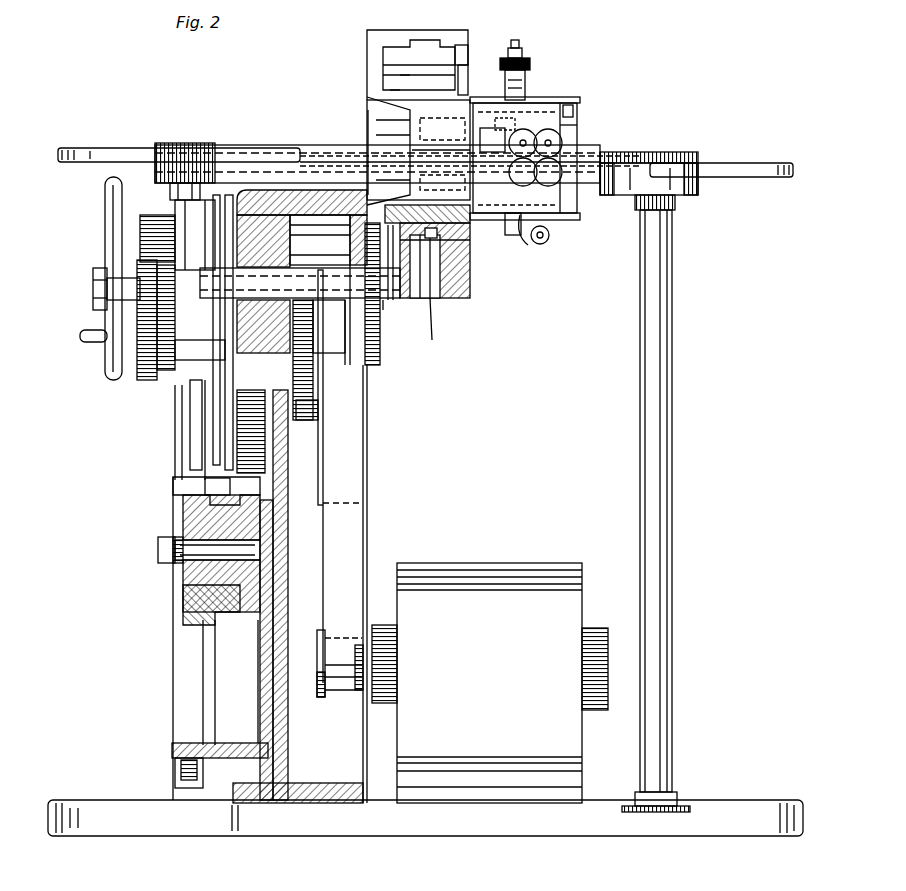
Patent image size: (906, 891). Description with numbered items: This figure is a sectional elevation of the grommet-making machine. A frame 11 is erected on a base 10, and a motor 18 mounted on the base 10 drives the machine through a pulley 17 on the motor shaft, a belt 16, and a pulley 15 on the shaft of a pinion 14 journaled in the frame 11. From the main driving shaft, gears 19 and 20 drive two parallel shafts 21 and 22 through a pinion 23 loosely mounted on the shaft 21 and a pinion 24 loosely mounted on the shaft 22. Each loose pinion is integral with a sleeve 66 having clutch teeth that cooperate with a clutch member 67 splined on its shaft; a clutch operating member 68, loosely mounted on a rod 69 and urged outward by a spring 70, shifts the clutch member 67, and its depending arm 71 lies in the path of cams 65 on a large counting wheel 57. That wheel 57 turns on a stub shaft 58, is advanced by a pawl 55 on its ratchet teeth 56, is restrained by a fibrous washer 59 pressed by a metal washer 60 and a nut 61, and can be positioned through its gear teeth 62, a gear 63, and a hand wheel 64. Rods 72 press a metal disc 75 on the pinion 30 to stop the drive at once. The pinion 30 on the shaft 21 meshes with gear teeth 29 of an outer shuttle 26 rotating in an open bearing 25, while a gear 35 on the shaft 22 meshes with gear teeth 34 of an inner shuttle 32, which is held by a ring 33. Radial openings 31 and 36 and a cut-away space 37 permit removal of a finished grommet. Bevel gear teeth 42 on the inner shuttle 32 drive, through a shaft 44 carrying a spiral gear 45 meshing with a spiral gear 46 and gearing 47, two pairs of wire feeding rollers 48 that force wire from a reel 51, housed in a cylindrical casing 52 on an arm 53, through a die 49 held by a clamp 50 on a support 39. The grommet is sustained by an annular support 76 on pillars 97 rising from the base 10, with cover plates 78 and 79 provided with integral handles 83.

The base 10 is at (398, 826).
The frame 11 is at (323, 503).
The pinion 14 is at (323, 425).
The pulley 15 is at (367, 398).
The belt 16 is at (352, 456).
The pulley 17 is at (316, 672).
The motor 18 is at (490, 683).
The gear 19 is at (105, 362).
The gear 20 is at (105, 340).
The shaft 21 is at (303, 232).
The shaft 22 is at (340, 315).
The pinion 23 is at (175, 225).
The pinion 24 is at (135, 258).
The bearing 25 is at (470, 290).
The shuttle 26 is at (470, 248).
The gear teeth 29 is at (400, 290).
The pinion 30 is at (388, 300).
The radial opening 31 is at (420, 60).
The shuttle 32 is at (440, 298).
The ring 33 is at (435, 331).
The gear teeth 34 is at (379, 152).
The gear 35 is at (372, 365).
The radial opening 36 is at (395, 90).
The cut-away space 37 is at (405, 75).
The support 39 is at (560, 130).
The bevel gear teeth 42 is at (478, 222).
The shaft 44 is at (545, 240).
The spiral gear 45 is at (540, 241).
The spiral gear 46 is at (536, 216).
The gearing 47 is at (512, 117).
The wire feeding rollers 48 is at (565, 140).
The die 49 is at (441, 136).
The clamp 50 is at (494, 140).
The reel 51 is at (562, 118).
The cylindrical casing 52 is at (548, 100).
The arm 53 is at (478, 125).
The pawl 55 is at (313, 345).
The ratchet teeth 56 is at (290, 480).
The counting wheel 57 is at (200, 605).
The stub shaft 58 is at (185, 520).
The fibrous washer 59 is at (185, 590).
The metal washer 60 is at (178, 565).
The nut 61 is at (160, 540).
The gear teeth 62 is at (230, 475).
The gear 63 is at (240, 430).
The hand wheel 64 is at (180, 350).
The cams 65 is at (190, 455).
The sleeve 66 is at (158, 225).
The clutch member 67 is at (220, 200).
The clutch operating member 68 is at (200, 375).
The rod 69 is at (307, 428).
The spring 70 is at (221, 430).
The arm 71 is at (150, 372).
The rods 72 is at (240, 195).
The metal disc 75 is at (390, 310).
The support 76 is at (690, 185).
The cover plate 78 is at (283, 148).
The cover plate 79 is at (680, 152).
The handles 83 is at (770, 163).
The pillars 97 is at (665, 548).